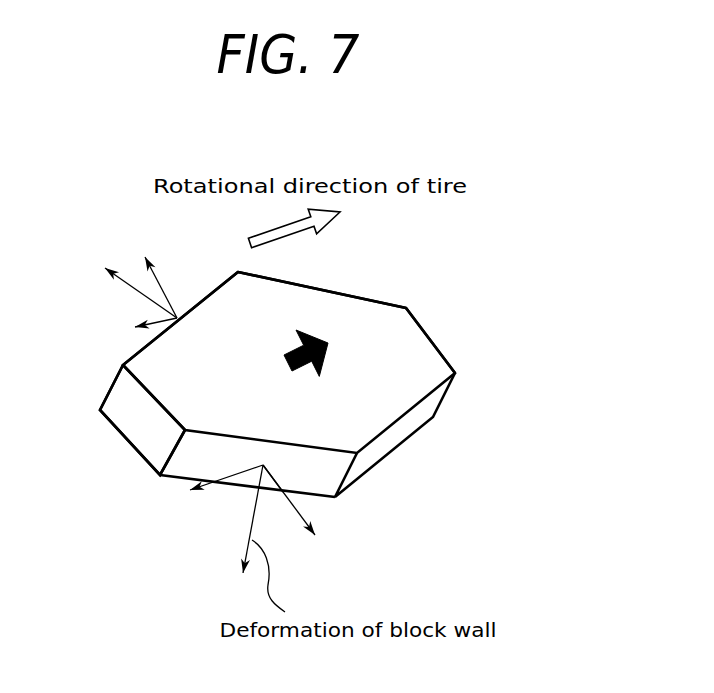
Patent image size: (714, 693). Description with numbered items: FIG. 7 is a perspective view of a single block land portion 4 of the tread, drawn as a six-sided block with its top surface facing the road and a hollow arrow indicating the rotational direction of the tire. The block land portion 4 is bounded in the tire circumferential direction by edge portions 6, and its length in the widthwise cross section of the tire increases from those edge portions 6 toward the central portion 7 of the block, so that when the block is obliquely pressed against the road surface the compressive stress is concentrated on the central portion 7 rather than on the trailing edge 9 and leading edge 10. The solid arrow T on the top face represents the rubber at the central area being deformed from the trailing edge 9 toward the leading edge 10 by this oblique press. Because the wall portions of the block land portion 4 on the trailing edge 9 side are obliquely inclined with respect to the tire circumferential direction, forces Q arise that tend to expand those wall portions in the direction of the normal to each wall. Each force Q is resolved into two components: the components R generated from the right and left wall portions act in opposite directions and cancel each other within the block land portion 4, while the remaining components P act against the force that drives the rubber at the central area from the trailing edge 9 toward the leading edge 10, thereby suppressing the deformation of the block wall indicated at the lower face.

The block land portion 4 is at (435, 317).
The edge portion of block land portion in a tire circumferential direction 6 is at (406, 308).
The central portion of block land portion 7 is at (238, 272).
The trailing edge 9 is at (127, 403).
The leading edge 10 is at (445, 356).
The rubber deformed from a trailing edge to a leading edge by the oblique press T is at (322, 360).
The components P of the forces Q P is at (198, 416).
The forces Q is at (172, 427).
The components R of the forces Q R is at (231, 395).